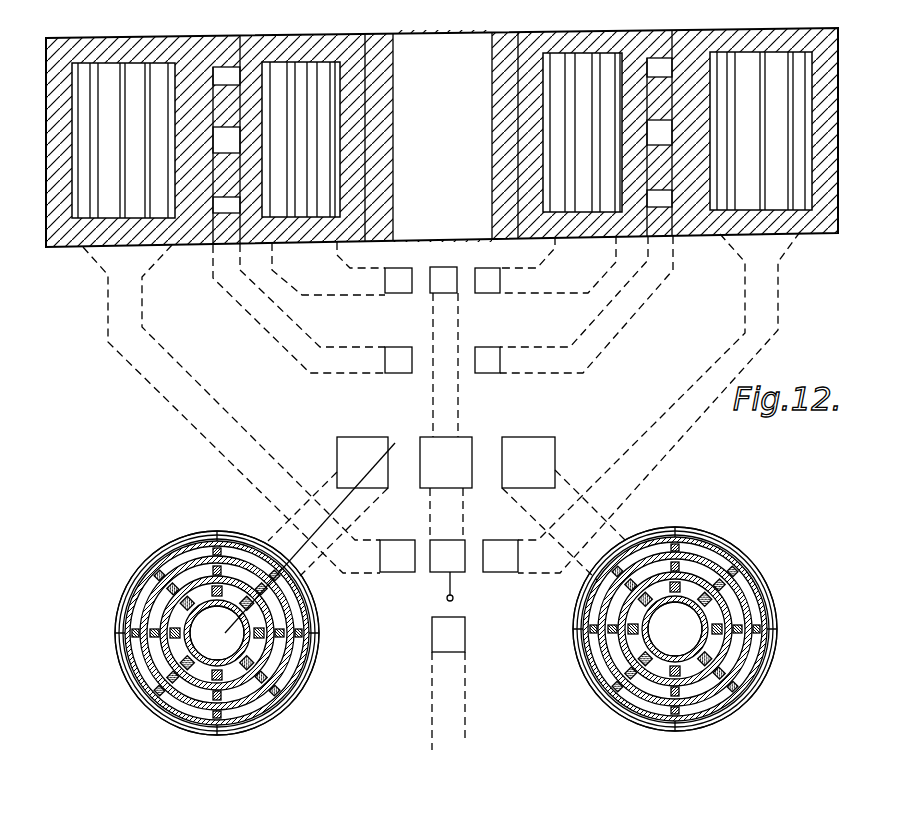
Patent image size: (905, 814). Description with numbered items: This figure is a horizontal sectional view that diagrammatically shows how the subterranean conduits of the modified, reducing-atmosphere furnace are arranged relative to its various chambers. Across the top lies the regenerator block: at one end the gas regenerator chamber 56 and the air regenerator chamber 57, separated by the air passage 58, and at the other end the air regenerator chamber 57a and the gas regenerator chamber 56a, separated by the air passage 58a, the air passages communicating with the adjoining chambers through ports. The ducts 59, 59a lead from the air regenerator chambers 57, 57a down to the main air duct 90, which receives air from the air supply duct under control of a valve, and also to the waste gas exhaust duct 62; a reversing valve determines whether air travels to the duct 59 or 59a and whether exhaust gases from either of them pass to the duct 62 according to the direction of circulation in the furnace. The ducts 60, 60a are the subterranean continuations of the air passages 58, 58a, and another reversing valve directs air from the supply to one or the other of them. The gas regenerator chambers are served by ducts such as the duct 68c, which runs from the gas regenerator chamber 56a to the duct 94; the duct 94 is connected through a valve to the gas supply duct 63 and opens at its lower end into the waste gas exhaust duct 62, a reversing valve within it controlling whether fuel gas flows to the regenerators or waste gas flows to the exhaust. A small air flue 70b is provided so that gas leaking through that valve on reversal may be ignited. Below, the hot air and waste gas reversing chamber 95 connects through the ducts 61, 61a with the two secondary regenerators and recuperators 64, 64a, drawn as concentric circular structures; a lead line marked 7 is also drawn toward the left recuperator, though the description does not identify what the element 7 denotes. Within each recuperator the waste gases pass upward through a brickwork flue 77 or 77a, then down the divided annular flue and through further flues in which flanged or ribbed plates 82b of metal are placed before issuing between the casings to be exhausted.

The gas regenerator chamber 56 is at (123, 140).
The air regenerator chamber 57 is at (301, 139).
The air passage 58 is at (226, 140).
The air regenerator chamber 57a is at (582, 132).
The gas regenerator chamber 56a is at (761, 131).
The air passage 58a is at (658, 200).
The duct 59 is at (342, 268).
The duct 59a is at (545, 264).
The duct 60 is at (312, 311).
The duct 60a is at (574, 305).
The main air duct 90 is at (430, 293).
The waste gas exhaust duct 62 is at (445, 365).
The duct 61 is at (362, 462).
The hot air and waste gas reversing chamber 95 is at (446, 462).
The duct 61a is at (528, 462).
The shaft 7 is at (152, 716).
The duct 94 is at (440, 562).
The small air flue 70b is at (455, 597).
The gas supply duct 63 is at (447, 654).
The brickwork flue 77 is at (205, 640).
The secondary regenerator and recuperator 64 is at (308, 663).
The flanged or ribbed plates 82b is at (258, 713).
The brickwork flue 77a is at (693, 632).
The secondary regenerator and recuperator 64a is at (612, 648).
The duct 68c is at (659, 402).